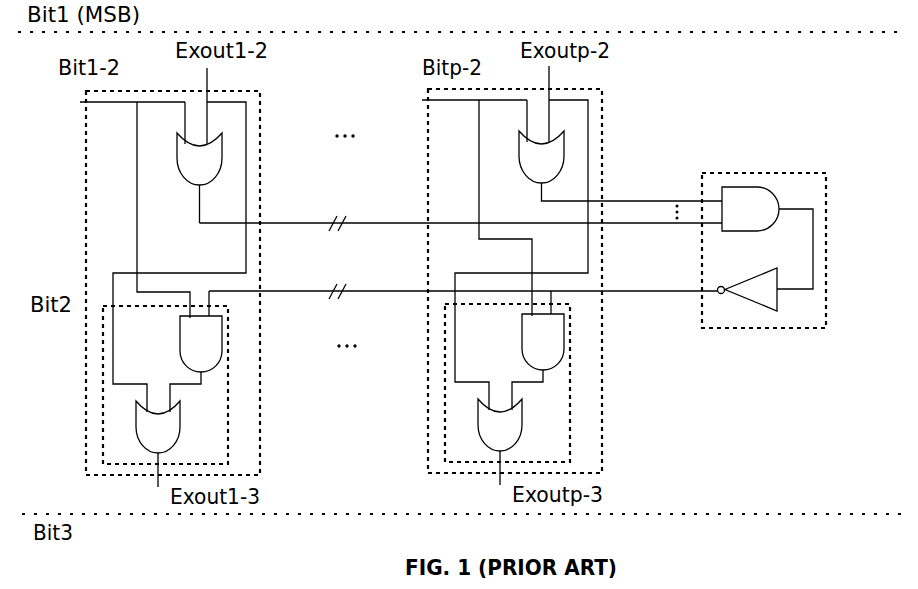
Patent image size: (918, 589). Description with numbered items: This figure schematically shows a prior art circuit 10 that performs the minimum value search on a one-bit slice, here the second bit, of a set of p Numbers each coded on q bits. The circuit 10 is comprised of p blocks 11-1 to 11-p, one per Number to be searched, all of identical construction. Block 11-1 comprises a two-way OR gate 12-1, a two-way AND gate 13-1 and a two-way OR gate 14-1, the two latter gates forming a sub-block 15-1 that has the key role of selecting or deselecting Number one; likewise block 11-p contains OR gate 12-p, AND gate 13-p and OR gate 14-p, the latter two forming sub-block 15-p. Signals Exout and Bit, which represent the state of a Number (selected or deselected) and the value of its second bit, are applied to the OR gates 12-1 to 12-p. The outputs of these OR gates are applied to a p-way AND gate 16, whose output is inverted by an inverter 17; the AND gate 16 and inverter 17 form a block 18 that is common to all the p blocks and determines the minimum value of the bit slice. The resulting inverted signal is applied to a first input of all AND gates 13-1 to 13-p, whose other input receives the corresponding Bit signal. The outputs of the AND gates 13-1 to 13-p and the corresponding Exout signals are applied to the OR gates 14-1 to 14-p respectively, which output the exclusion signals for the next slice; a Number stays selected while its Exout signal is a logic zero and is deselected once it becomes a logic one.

The circuit 10 is at (709, 79).
The block 11-1 is at (84, 121).
The block 11-p is at (489, 281).
The two-way OR gate 12-1 is at (181, 178).
The two-way OR gate 12-p is at (606, 137).
The two-way AND gate 13-1 is at (180, 352).
The two-way AND gate 13-p is at (515, 350).
The two-way OR gate 14-1 is at (179, 432).
The two-way OR gate 14-p is at (523, 442).
The sub-block 15-1 is at (232, 396).
The sub-block 15-p is at (548, 383).
The p-way AND gate 16 is at (757, 231).
The inverter 17 is at (777, 297).
The block 18 is at (770, 330).